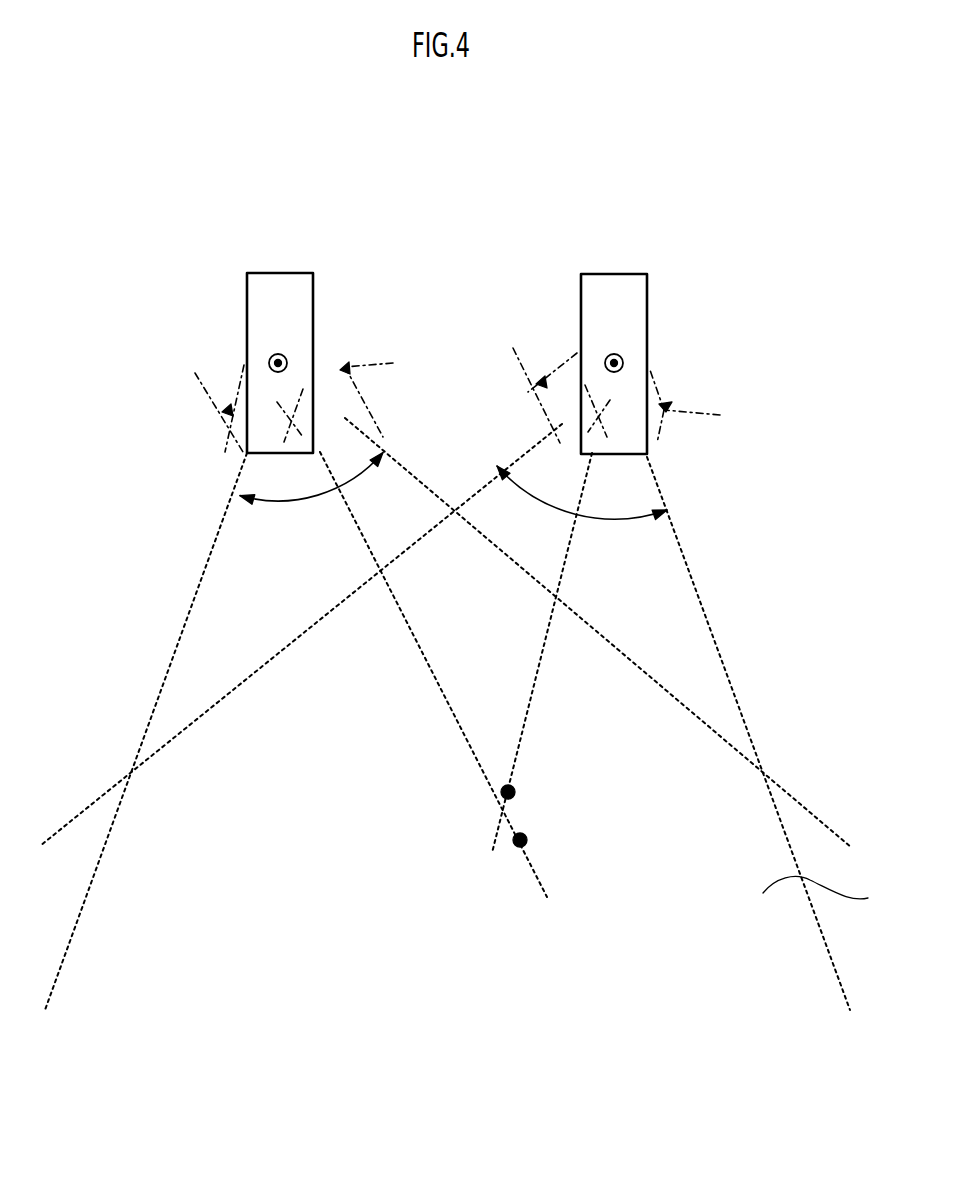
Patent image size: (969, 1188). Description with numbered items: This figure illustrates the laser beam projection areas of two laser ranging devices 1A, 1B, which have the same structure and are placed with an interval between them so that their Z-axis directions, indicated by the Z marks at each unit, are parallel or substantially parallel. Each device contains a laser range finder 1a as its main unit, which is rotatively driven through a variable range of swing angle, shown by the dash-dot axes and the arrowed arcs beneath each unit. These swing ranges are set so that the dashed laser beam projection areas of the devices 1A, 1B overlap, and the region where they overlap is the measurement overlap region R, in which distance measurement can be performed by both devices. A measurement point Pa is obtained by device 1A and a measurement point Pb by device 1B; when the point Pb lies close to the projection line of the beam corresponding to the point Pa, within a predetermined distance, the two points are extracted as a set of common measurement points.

The laser ranging device 1A is at (218, 264).
The laser ranging device 1B is at (562, 264).
The laser range finder 1a is at (275, 272).
The Z-axis direction Z is at (280, 354).
The measurement point Pa is at (527, 838).
The measurement point Pb is at (515, 790).
The measurement overlap region R is at (826, 894).